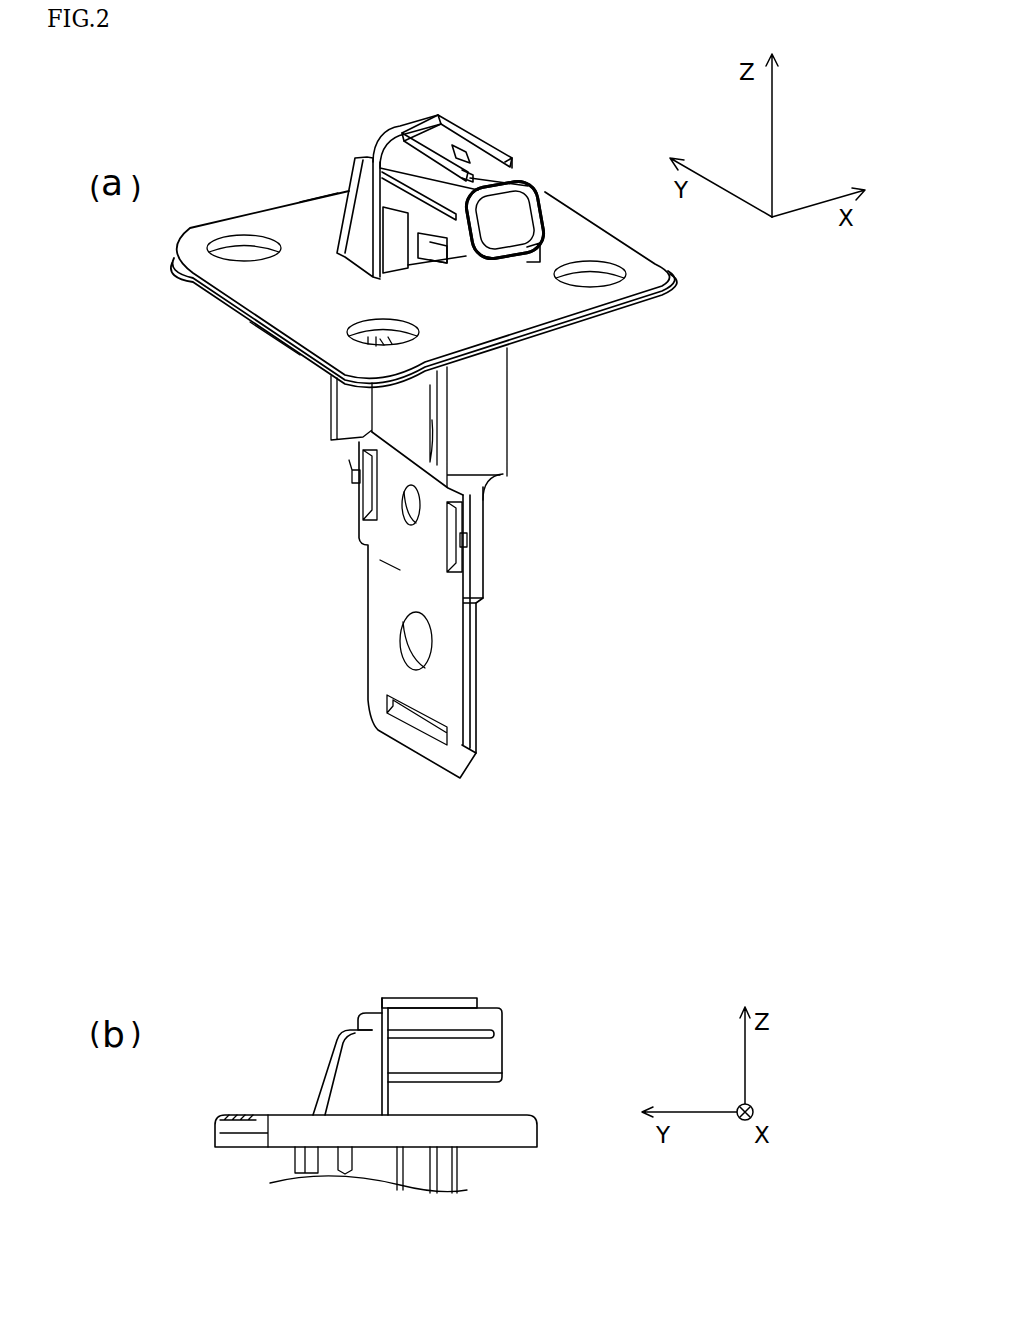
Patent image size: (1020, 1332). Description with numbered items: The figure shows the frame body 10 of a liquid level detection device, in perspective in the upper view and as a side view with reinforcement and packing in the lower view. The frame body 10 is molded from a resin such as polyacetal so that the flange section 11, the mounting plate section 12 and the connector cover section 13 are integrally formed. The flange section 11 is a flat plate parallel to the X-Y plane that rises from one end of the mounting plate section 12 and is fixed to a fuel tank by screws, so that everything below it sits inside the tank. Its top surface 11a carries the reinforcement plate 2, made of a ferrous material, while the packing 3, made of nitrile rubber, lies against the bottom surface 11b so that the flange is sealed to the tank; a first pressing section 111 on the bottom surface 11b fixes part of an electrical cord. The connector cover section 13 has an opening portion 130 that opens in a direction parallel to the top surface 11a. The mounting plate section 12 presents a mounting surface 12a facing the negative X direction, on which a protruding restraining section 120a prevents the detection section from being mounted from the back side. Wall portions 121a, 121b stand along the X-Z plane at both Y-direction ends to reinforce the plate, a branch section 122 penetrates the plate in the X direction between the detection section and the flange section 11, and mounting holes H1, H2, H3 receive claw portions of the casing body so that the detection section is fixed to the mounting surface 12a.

The frame body 10 is at (686, 509).
The flange section 11 is at (243, 284).
The top surface 11a is at (328, 200).
The bottom surface 11b is at (256, 347).
The mounting plate section 12 is at (375, 620).
The mounting surface 12a is at (403, 575).
The connector cover section 13 is at (413, 163).
The opening portion 130 is at (544, 188).
The wall portion 121a is at (338, 402).
The wall portion 121b is at (500, 410).
The restraining section 120a is at (351, 478).
The branch section 122 is at (470, 470).
The mounting hole H1 is at (365, 512).
The mounting hole H2 is at (450, 577).
The mounting hole H3 is at (395, 703).
The reinforcement plate 2 is at (243, 1117).
The packing 3 is at (243, 1143).
The first pressing section 111 is at (342, 1175).